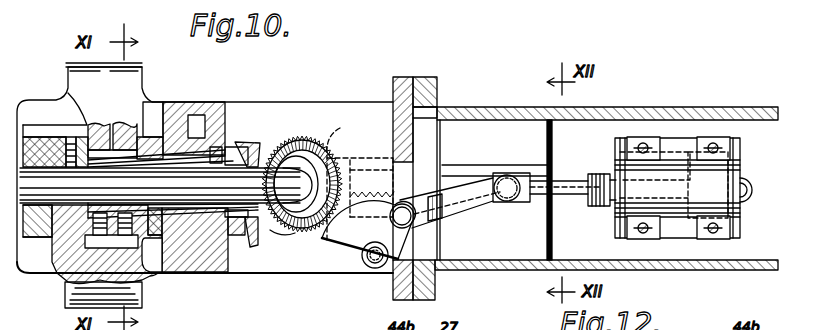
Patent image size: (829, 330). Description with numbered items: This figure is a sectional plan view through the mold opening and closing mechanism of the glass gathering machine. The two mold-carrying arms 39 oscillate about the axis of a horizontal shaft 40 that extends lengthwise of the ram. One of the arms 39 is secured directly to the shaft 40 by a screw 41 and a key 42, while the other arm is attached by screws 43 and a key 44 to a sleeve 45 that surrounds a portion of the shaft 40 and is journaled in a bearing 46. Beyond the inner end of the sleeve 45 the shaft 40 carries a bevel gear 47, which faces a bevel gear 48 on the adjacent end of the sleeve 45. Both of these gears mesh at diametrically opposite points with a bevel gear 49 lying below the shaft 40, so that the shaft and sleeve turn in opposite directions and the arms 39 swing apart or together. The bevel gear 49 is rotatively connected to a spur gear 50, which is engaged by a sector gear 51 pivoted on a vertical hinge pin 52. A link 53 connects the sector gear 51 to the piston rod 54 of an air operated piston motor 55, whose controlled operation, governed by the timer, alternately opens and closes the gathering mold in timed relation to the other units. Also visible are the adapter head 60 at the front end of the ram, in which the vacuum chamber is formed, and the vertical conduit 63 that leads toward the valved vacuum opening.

The arms 39 is at (142, 295).
The horizontal shaft 40 is at (322, 126).
The screw 41 is at (72, 137).
The key 42 is at (37, 234).
The screws 43 is at (72, 273).
The key 44 is at (110, 150).
The sleeve 45 is at (237, 147).
The bearing 46 is at (233, 240).
The bevel gear 47 is at (374, 125).
The bevel gear 48 is at (292, 123).
The bevel gear 49 is at (262, 232).
The spur gear 50 is at (290, 234).
The sector gear 51 is at (326, 240).
The vertical hinge pin 52 is at (374, 258).
The link 53 is at (460, 210).
The piston rod 54 is at (578, 200).
The air operated piston motor 55 is at (738, 170).
The adapter head 60 is at (32, 262).
The vertical conduit 63 is at (193, 122).